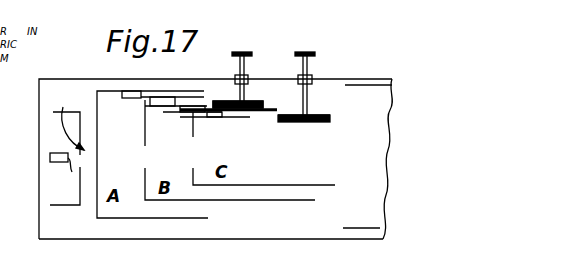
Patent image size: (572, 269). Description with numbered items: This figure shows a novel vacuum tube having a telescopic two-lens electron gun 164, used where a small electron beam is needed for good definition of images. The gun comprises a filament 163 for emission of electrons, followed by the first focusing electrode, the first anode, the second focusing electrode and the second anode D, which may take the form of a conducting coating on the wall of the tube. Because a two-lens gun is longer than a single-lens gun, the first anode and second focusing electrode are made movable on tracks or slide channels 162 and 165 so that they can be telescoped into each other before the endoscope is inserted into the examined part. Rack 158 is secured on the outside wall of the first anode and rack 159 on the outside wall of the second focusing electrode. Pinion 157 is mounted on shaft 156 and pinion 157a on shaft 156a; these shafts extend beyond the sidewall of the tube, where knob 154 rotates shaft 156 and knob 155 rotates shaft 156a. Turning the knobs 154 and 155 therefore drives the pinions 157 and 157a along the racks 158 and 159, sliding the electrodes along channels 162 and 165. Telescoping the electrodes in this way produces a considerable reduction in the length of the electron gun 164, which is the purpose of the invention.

The knob 154 is at (241, 52).
The knob 155 is at (306, 52).
The shaft 156 is at (247, 90).
The shaft 156a is at (309, 95).
The pinion 157 is at (244, 110).
The pinion 157a is at (306, 118).
The rack 158 is at (226, 100).
The rack 159 is at (320, 115).
The track or slide channel 162 is at (139, 99).
The filament 163 is at (59, 175).
The two-lens electron gun 164 is at (63, 116).
The track or slide channel 165 is at (190, 114).
The second anode D is at (353, 228).